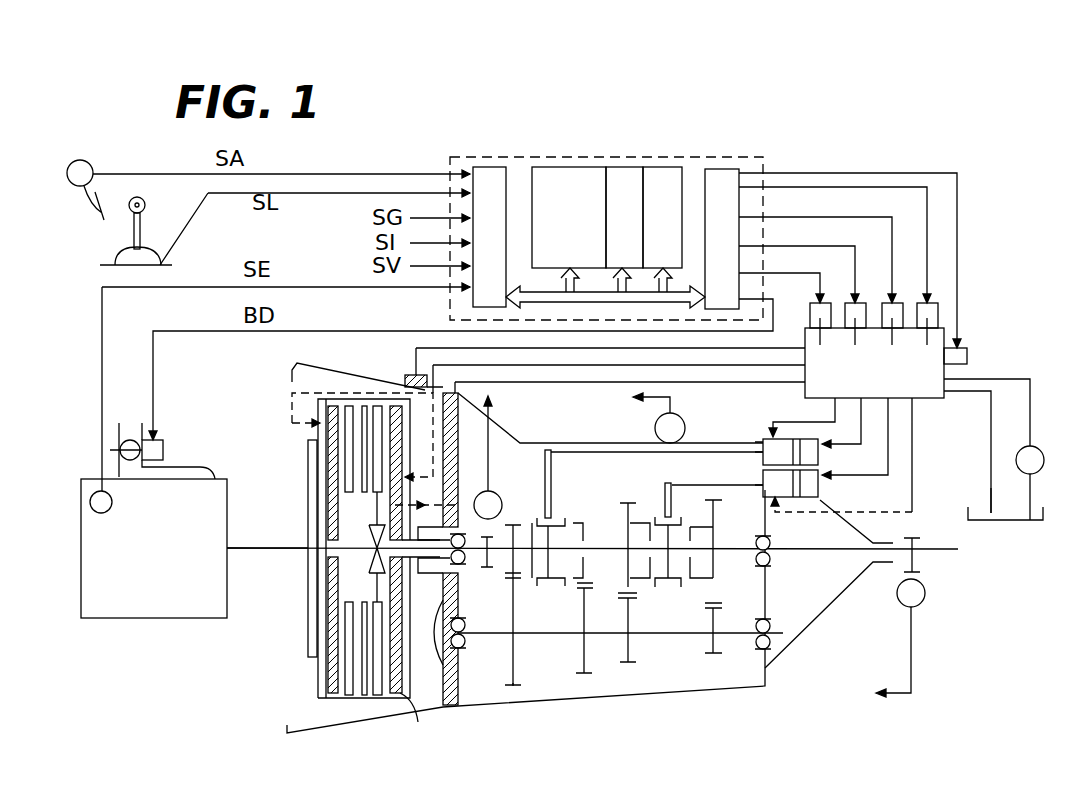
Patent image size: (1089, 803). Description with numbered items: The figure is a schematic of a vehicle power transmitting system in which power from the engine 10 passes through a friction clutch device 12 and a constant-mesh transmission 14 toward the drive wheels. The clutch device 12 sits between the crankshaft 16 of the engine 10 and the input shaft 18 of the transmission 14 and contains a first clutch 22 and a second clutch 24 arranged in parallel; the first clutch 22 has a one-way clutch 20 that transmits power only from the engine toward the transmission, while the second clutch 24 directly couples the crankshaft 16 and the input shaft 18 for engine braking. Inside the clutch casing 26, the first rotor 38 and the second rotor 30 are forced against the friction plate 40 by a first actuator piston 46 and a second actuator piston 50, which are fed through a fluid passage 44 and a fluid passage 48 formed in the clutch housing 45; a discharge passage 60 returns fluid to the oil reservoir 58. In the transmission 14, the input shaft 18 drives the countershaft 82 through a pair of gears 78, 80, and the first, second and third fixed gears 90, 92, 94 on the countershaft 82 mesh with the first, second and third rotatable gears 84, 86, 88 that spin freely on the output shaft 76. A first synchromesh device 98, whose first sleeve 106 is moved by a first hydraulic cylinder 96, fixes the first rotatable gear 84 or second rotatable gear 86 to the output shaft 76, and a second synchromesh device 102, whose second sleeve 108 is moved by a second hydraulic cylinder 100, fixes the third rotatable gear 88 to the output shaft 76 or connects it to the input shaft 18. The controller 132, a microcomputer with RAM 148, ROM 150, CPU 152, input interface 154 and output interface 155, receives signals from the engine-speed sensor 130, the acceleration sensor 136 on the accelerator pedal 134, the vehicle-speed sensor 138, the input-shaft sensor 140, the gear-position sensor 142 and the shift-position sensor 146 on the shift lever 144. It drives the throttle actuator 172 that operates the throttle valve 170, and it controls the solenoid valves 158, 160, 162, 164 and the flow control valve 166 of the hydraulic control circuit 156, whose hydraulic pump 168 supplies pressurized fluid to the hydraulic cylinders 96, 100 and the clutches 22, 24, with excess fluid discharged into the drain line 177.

The engine 10 is at (116, 618).
The friction clutch device 12 is at (286, 617).
The constant-mesh transmission 14 is at (692, 700).
The crankshaft 16 is at (262, 546).
The input shaft 18 is at (472, 562).
The one-way clutch 20 is at (365, 565).
The first clutch 22 is at (382, 703).
The second clutch 24 is at (341, 703).
The clutch casing 26 is at (350, 685).
The second rotor 30 is at (320, 690).
The first rotor 38 is at (414, 725).
The friction plate 40 is at (362, 668).
The fluid passage 44 is at (543, 367).
The clutch housing 45 is at (336, 390).
The first actuator piston 46 is at (400, 657).
The fluid passage 48 is at (416, 353).
The second actuator piston 50 is at (333, 667).
The oil reservoir 58 is at (1008, 521).
The discharge passage 60 is at (580, 384).
The output shaft 76 is at (805, 555).
The gear 78 is at (510, 578).
The gear 80 is at (515, 686).
The countershaft 82 is at (484, 642).
The first rotatable gear 84 is at (718, 605).
The second rotatable gear 86 is at (622, 590).
The third rotatable gear 88 is at (587, 518).
The first fixed gear 90 is at (718, 660).
The second fixed gear 92 is at (630, 665).
The third fixed gear 94 is at (585, 675).
The first hydraulic cylinder 96 is at (817, 487).
The first synchromesh device 98 is at (667, 590).
The second hydraulic cylinder 100 is at (817, 455).
The second synchromesh device 102 is at (551, 590).
The first sleeve 106 is at (677, 586).
The second sleeve 108 is at (558, 515).
The engine-speed sensor 130 is at (90, 502).
The controller 132 is at (450, 297).
The accelerator pedal 134 is at (85, 194).
The acceleration sensor 136 is at (91, 167).
The vehicle-speed sensor 138 is at (925, 600).
The input-shaft sensor 140 is at (498, 497).
The gear-position sensor 142 is at (681, 420).
The shift lever 144 is at (128, 228).
The shift-position sensor 146 is at (118, 256).
The random-access memory 148 is at (668, 175).
The read-only memory 150 is at (620, 175).
The central processing unit 152 is at (556, 175).
The input interface 154 is at (485, 175).
The output interface 155 is at (722, 175).
The hydraulic control circuit 156 is at (955, 368).
The solenoid valve 158 is at (924, 345).
The solenoid valve 160 is at (894, 341).
The solenoid valve 162 is at (856, 345).
The solenoid valve 164 is at (827, 341).
The flow control valve 166 is at (967, 353).
The hydraulic pump 168 is at (1060, 440).
The throttle valve 170 is at (128, 440).
The throttle actuator 172 is at (163, 449).
The drain line 177 is at (988, 488).